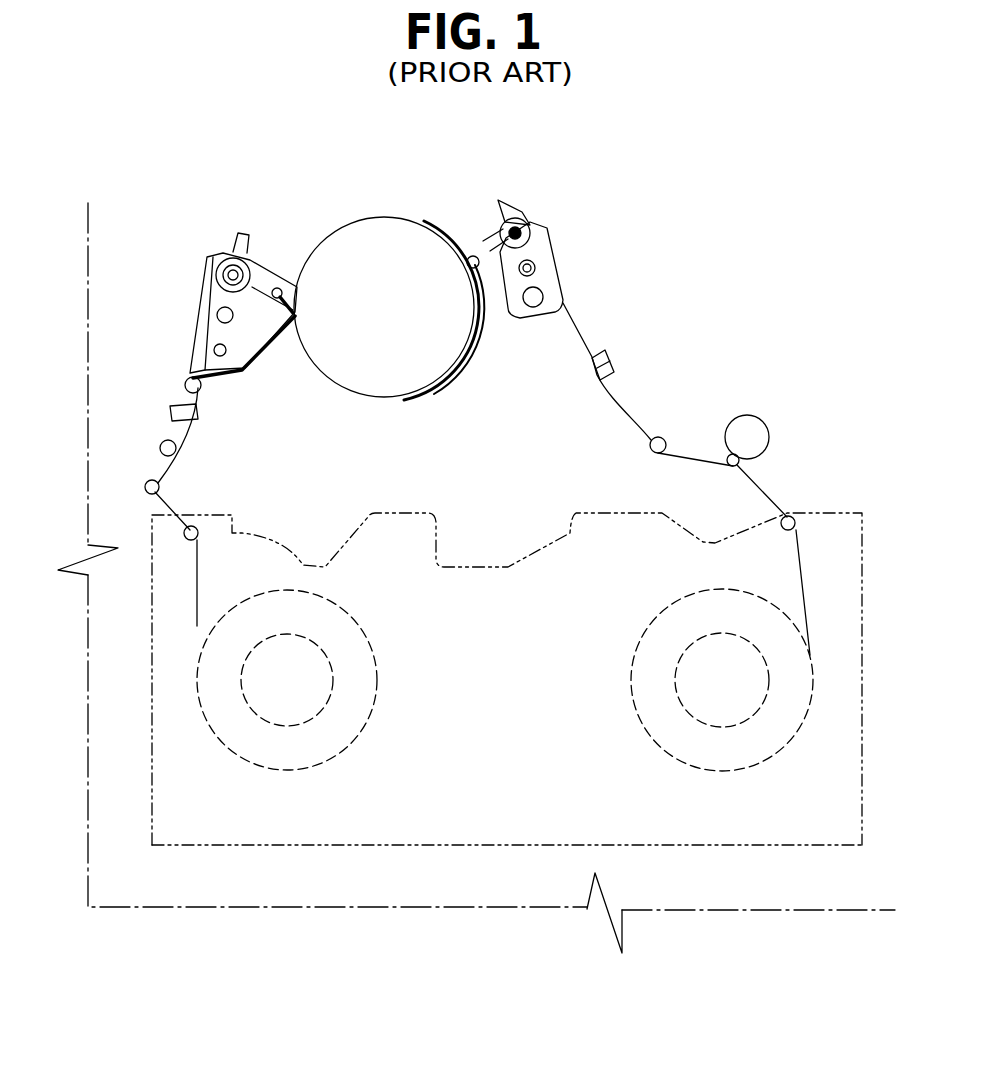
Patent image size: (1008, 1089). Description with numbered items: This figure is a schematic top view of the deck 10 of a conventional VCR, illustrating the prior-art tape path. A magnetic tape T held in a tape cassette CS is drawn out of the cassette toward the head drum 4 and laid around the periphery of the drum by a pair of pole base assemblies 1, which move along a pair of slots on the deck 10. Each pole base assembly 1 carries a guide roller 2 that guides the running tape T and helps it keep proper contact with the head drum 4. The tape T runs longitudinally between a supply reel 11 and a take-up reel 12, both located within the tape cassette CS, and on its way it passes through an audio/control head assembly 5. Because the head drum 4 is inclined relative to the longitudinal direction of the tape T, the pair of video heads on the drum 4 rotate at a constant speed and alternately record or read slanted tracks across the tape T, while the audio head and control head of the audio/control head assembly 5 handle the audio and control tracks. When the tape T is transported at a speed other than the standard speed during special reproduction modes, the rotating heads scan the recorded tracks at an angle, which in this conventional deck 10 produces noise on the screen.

The pole base assembly 1 is at (195, 282).
The guide roller 2 is at (230, 253).
The head drum 4 is at (357, 252).
The audio/control head assembly 5 is at (612, 358).
The deck 10 is at (86, 870).
The supply reel 11 is at (313, 768).
The take-up reel 12 is at (812, 663).
The magnetic tape T is at (197, 620).
The tape cassette CS is at (217, 847).